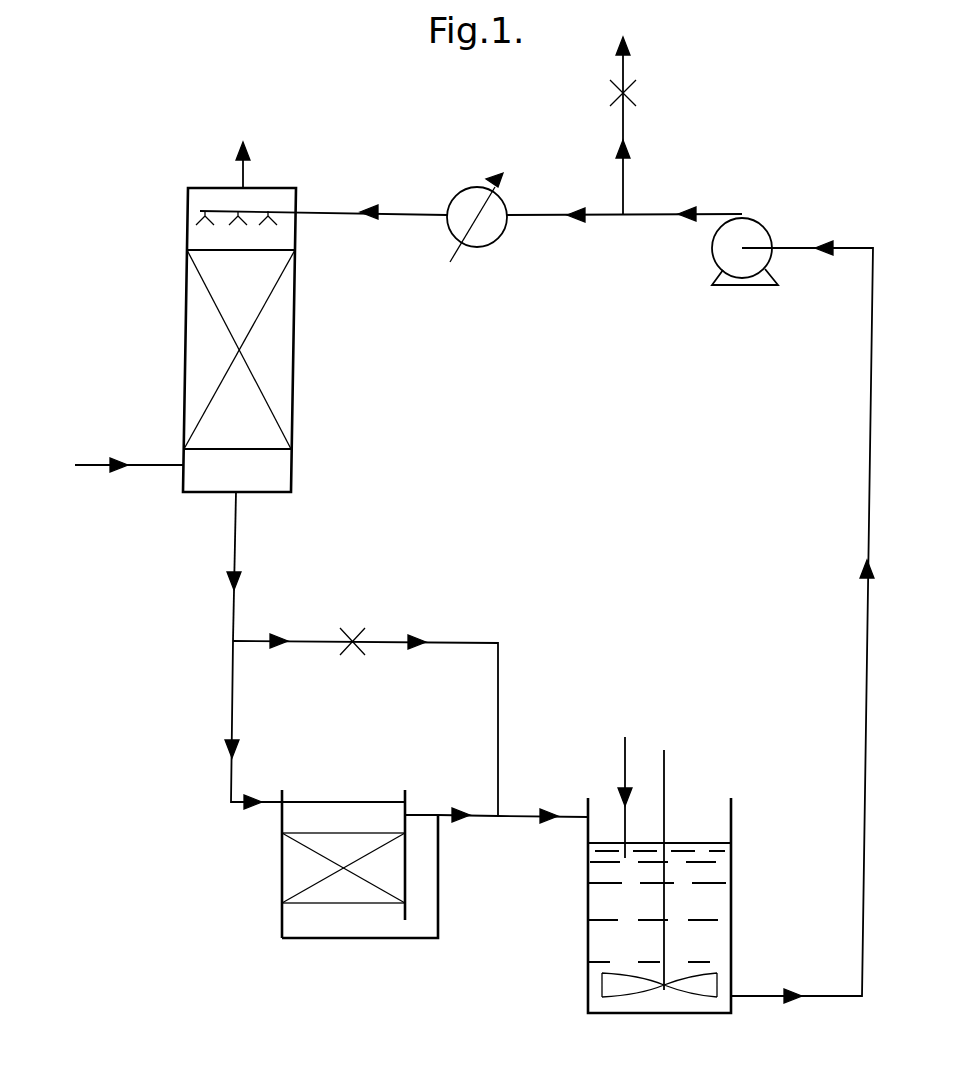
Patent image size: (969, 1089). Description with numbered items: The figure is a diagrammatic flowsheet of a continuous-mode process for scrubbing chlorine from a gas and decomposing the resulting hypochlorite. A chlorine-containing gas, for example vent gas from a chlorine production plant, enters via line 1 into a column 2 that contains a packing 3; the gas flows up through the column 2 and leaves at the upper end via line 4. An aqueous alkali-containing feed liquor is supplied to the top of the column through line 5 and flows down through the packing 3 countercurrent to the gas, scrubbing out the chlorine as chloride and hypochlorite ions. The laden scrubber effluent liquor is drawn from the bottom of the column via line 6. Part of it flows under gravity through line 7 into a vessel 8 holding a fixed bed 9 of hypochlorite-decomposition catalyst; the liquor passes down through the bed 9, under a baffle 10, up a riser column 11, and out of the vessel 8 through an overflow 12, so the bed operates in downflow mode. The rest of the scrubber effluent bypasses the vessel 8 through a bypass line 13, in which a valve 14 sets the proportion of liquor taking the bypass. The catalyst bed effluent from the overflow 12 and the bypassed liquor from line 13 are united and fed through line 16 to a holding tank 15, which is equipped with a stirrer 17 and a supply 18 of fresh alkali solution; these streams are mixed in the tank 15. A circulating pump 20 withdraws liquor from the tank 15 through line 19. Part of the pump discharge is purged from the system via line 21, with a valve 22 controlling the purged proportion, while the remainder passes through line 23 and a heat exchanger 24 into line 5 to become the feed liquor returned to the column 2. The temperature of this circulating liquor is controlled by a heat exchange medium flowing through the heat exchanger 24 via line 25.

The line 1 is at (142, 464).
The column 2 is at (292, 478).
The packing 3 is at (280, 358).
The line 4 is at (243, 172).
The line 5 is at (410, 210).
The line 6 is at (233, 613).
The line 7 is at (232, 773).
The vessel 8 is at (295, 821).
The fixed bed 9 is at (292, 863).
The baffle 10 is at (405, 905).
The riser column 11 is at (425, 851).
The overflow 12 is at (450, 805).
The bypass line 13 is at (305, 638).
The valve 14 is at (358, 630).
The holding tank 15 is at (588, 993).
The line 16 is at (522, 815).
The stirrer 17 is at (664, 785).
The supply 18 is at (625, 760).
The line 19 is at (865, 637).
The circulating pump 20 is at (742, 217).
The line 21 is at (623, 180).
The valve 22 is at (623, 63).
The line 23 is at (593, 217).
The heat exchanger 24 is at (480, 185).
The line 25 is at (453, 253).